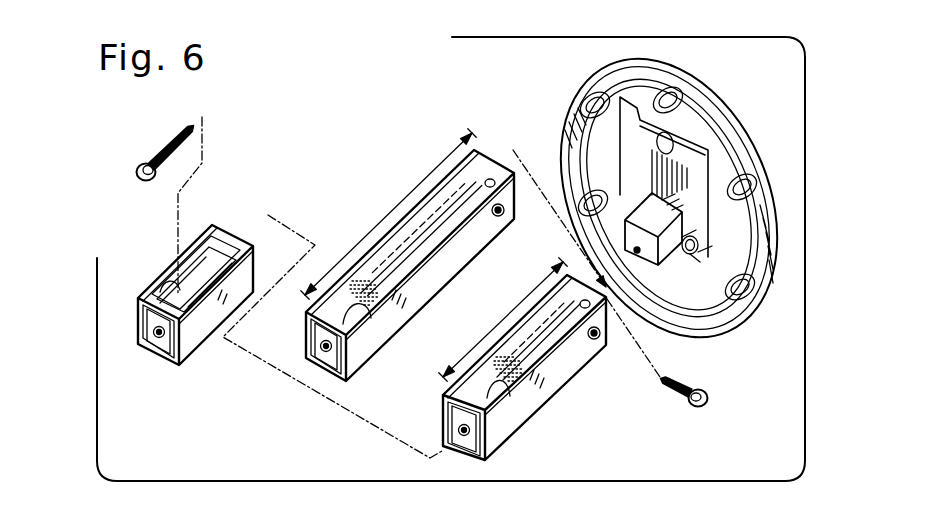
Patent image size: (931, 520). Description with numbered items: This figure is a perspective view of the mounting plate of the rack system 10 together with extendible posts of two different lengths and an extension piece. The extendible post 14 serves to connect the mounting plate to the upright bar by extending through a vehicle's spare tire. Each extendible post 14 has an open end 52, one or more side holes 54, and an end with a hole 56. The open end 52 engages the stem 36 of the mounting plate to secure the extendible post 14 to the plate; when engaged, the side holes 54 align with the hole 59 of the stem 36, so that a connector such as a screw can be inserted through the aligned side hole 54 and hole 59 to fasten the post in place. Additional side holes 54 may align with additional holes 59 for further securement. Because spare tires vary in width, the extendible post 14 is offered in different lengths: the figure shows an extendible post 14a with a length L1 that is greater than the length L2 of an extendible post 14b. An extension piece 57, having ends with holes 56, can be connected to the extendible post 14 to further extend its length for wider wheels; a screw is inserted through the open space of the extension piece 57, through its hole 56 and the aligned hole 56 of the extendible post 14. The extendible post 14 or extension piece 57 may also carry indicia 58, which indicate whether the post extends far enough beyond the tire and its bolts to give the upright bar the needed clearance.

The rack system 10 is at (236, 118).
The extendible post 14 is at (406, 171).
The extendible post 14a is at (414, 290).
The extendible post 14b is at (549, 374).
The stem 36 is at (672, 260).
The open end 52 is at (502, 149).
The side hole 54 is at (500, 216).
The hole 56 is at (210, 246).
The extension piece 57 is at (189, 334).
The indicia 58 is at (178, 284).
The hole 59 is at (703, 262).
The length L1 is at (392, 212).
The length L2 is at (508, 312).